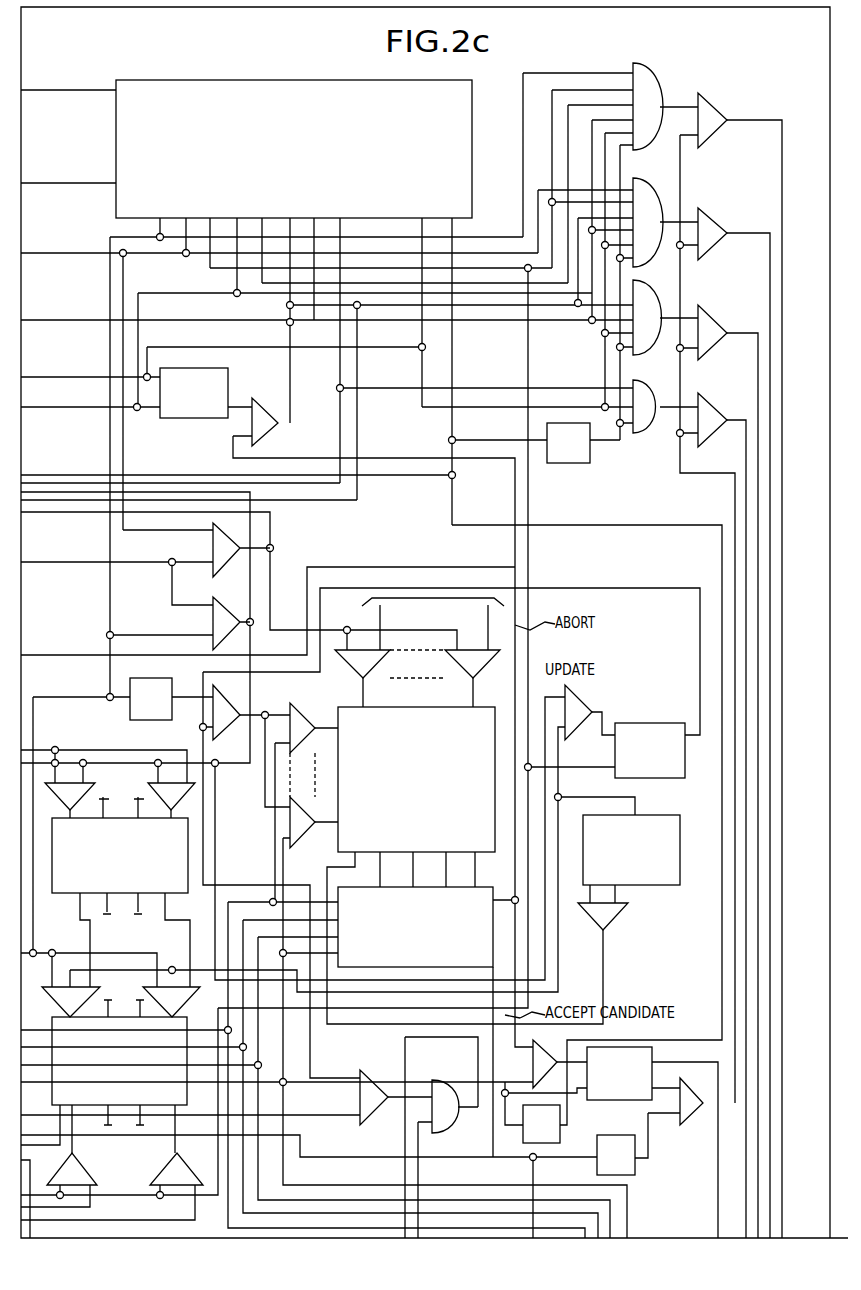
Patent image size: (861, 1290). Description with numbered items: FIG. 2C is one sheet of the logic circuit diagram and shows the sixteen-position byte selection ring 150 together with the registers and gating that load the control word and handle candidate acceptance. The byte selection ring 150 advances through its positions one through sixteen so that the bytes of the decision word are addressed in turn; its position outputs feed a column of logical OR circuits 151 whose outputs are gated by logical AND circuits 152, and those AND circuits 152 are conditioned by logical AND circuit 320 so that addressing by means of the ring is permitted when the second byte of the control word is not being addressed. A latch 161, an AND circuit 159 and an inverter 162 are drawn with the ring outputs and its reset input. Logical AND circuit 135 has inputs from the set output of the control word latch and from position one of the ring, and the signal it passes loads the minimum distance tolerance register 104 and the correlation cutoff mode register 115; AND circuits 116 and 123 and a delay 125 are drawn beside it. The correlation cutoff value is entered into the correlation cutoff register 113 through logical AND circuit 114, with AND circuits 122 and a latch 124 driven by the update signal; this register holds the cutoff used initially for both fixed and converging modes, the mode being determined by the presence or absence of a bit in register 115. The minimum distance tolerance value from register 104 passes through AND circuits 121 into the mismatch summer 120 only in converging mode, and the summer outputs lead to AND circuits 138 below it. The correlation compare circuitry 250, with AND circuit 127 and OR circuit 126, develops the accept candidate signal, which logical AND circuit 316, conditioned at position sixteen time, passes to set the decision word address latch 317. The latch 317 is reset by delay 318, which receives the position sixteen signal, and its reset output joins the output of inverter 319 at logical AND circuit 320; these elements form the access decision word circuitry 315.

The byte selection ring 150 is at (116, 143).
The OR gates 151 is at (640, 155).
The logical AND circuits 152 is at (708, 205).
The latch 161 is at (192, 420).
The AND gate 159 is at (265, 438).
The inverter 162 is at (590, 458).
The AND gate 116 is at (213, 548).
The logical AND circuit 135 is at (232, 606).
The delay 125 is at (130, 720).
The AND gate 123 is at (214, 688).
The AND gates 122 is at (302, 755).
The logical AND circuit 114 is at (445, 664).
The correlation cutoff register 113 is at (455, 834).
The latch 124 is at (655, 723).
The correlation cutoff mode register 115 is at (631, 872).
The minimum distance tolerance register 104 is at (66, 893).
The mismatch summer 120 is at (178, 1094).
The AND gates 121 is at (80, 998).
The AND gates 138 is at (157, 1170).
The correlation compare circuitry 250 is at (467, 956).
The AND gate 127 is at (364, 1070).
The OR gate 126 is at (442, 1080).
The logical AND circuit 316 is at (533, 1062).
The decision word address latch 317 is at (652, 1050).
The delay 318 is at (560, 1143).
The inverter 319 is at (635, 1173).
The logical AND circuit 320 is at (696, 1120).
The access decision word circuitry 315 is at (658, 1203).